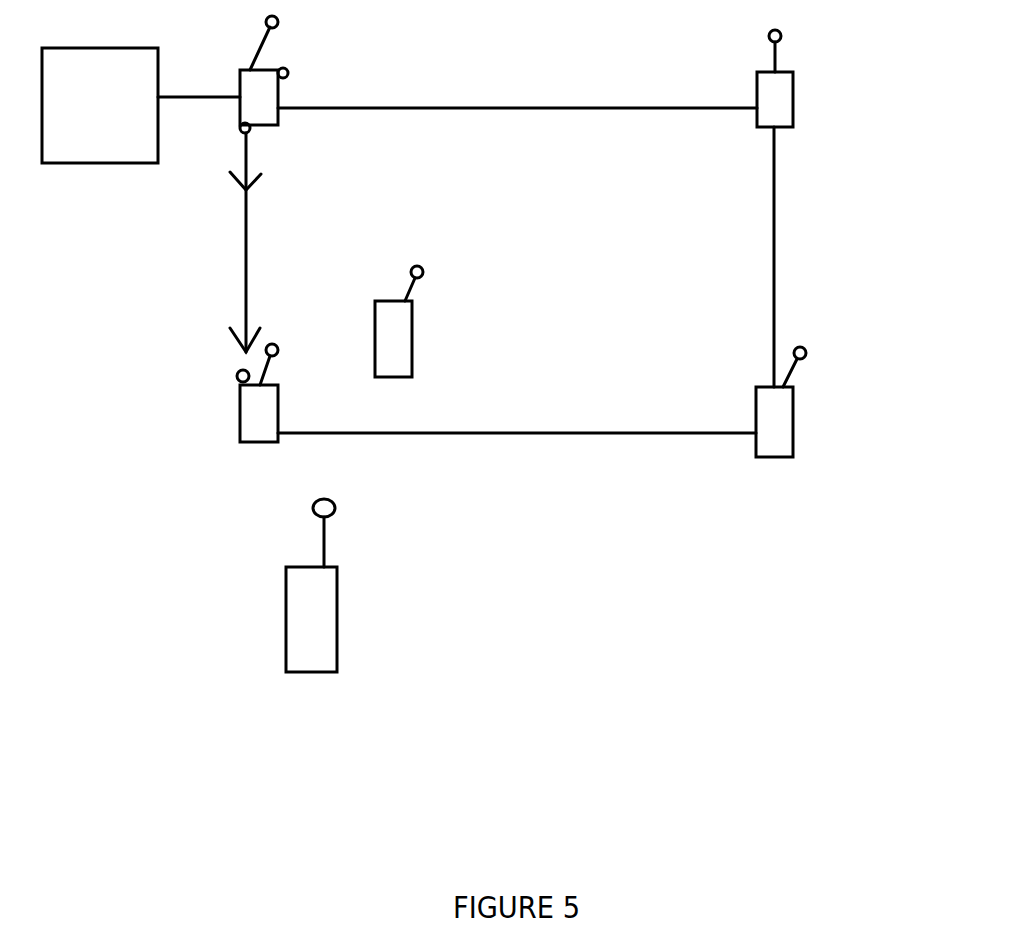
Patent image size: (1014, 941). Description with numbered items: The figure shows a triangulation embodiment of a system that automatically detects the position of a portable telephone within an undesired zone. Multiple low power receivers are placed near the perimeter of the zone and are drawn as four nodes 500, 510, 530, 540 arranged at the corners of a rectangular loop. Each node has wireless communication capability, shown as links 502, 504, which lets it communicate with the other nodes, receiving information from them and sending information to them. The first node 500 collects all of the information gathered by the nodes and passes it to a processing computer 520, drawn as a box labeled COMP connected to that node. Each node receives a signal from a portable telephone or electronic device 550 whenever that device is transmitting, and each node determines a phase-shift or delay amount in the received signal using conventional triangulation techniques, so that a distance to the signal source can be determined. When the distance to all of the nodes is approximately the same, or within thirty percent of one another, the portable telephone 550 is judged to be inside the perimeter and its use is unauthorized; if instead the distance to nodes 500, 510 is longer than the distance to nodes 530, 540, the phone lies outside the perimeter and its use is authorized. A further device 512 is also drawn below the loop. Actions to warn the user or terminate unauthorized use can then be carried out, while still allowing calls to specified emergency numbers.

The node 500 is at (760, 209).
The wireless communication capability 502 is at (241, 131).
The wireless communication capability 504 is at (288, 69).
The node 510 is at (772, 66).
The portable unit 512 is at (337, 618).
The processing computer 520 is at (100, 163).
The node 530 is at (237, 420).
The node 540 is at (793, 456).
The portable telephone 550 is at (412, 338).